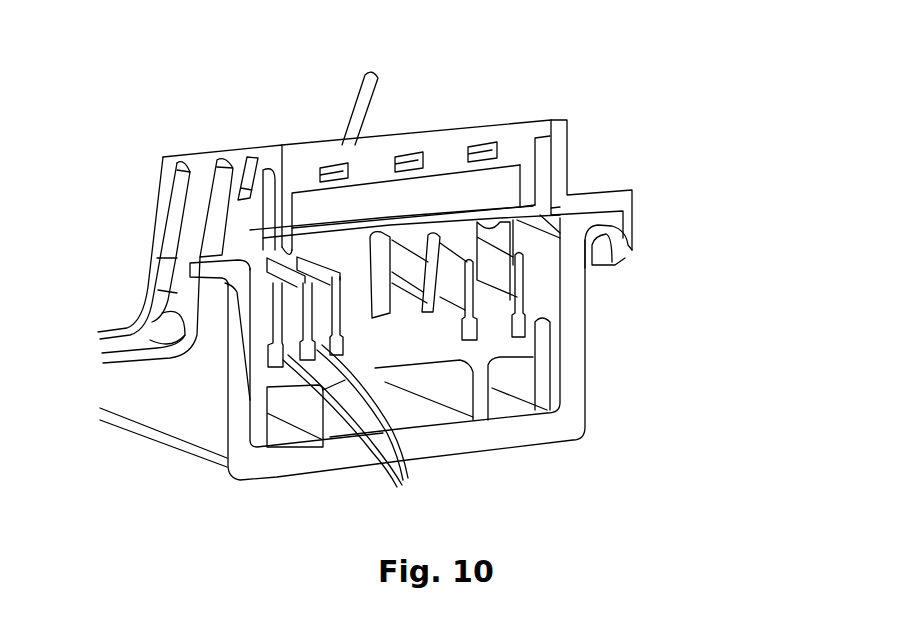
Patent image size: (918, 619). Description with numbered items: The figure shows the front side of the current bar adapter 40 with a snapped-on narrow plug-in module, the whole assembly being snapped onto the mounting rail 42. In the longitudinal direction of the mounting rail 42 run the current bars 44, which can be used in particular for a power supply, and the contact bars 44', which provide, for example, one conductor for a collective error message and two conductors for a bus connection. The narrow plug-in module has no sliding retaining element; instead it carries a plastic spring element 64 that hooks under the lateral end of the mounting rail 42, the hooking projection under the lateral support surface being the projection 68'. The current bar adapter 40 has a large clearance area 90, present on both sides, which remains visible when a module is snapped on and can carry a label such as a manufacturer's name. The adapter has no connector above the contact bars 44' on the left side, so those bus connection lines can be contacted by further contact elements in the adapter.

The current bar adapter 40 is at (443, 147).
The clearance area 90 is at (317, 207).
The mounting rail 42 is at (573, 353).
The spring element 64 is at (195, 325).
The projection 68' is at (694, 242).
The current bar 44 is at (468, 300).
The contact bar 44' is at (354, 433).